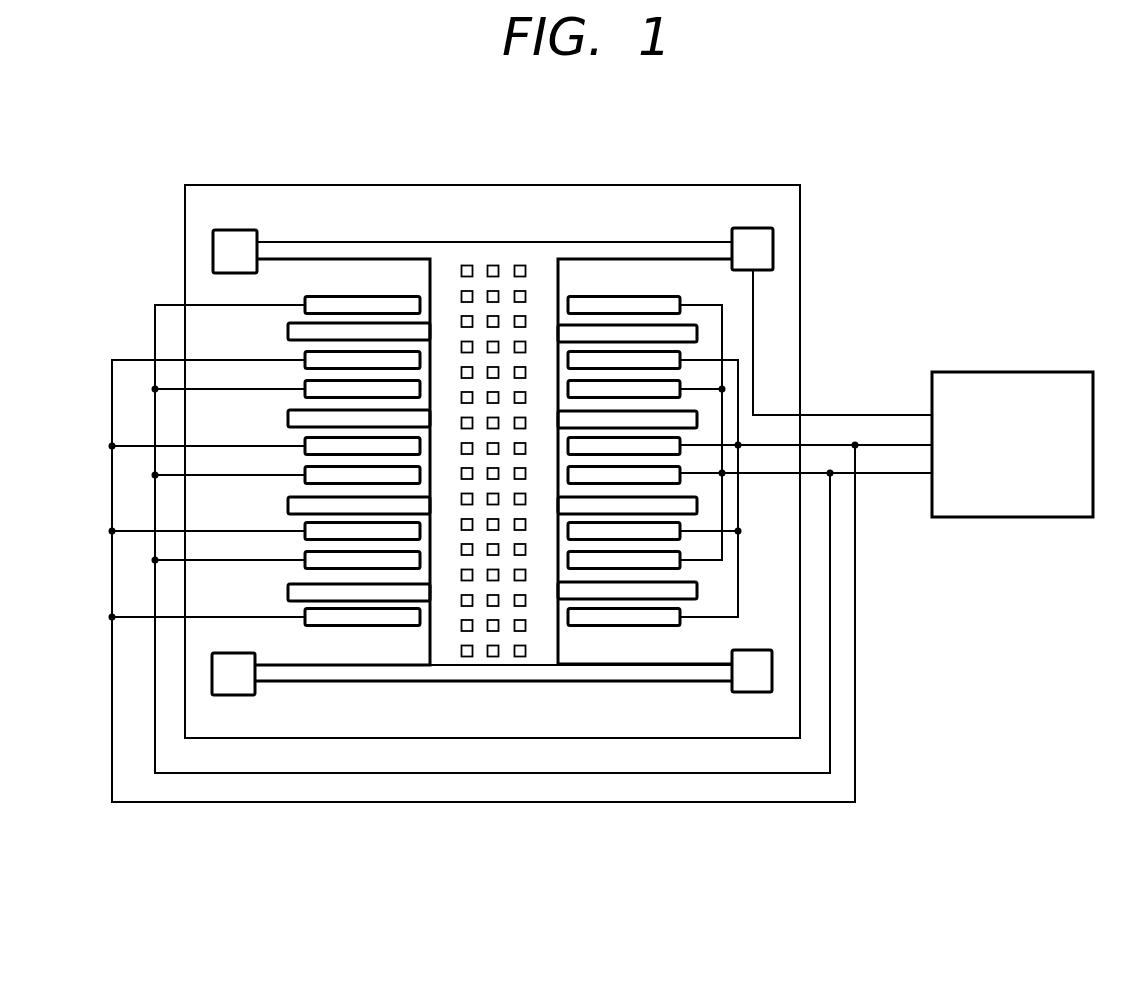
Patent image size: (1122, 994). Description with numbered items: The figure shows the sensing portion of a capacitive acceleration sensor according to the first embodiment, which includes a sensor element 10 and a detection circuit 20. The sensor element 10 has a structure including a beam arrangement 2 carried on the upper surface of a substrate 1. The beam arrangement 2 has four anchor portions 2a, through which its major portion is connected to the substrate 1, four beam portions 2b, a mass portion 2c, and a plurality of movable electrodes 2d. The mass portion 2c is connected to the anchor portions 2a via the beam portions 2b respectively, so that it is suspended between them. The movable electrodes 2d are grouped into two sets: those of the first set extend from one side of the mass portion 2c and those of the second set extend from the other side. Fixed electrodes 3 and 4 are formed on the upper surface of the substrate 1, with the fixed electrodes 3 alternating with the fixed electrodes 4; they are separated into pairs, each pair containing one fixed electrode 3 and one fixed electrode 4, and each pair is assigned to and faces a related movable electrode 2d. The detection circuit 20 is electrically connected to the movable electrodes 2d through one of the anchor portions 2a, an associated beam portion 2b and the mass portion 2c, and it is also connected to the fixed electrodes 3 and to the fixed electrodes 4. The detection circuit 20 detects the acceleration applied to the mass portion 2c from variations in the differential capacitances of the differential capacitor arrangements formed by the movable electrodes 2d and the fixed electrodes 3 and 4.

The substrate 1 is at (740, 185).
The sensor element 10 is at (422, 160).
The beam arrangement 2 is at (496, 243).
The anchor portions 2a is at (228, 247).
The beam portions 2b is at (314, 250).
The mass portion 2c is at (510, 668).
The movable electrodes 2d is at (292, 334).
The fixed electrodes 3 is at (305, 300).
The fixed electrodes 4 is at (305, 356).
The detection circuit 20 is at (1044, 372).